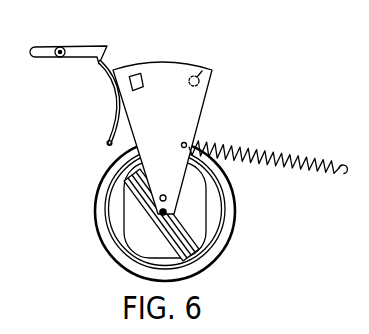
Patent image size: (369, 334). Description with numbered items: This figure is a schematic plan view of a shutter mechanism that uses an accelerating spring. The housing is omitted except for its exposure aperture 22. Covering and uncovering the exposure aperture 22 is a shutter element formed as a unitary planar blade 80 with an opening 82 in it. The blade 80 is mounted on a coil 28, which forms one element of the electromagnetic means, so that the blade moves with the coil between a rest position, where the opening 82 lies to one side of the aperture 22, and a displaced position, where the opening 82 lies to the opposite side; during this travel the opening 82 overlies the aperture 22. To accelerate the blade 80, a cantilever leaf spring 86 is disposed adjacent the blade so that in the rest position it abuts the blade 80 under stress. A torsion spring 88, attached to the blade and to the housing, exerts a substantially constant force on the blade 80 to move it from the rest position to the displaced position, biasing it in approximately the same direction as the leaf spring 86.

The exposure aperture 22 is at (212, 70).
The coil 28 is at (202, 230).
The unitary planar blade 80 is at (189, 109).
The opening 82 is at (137, 74).
The cantilever leaf spring 86 is at (97, 64).
The torsion spring 88 is at (257, 151).